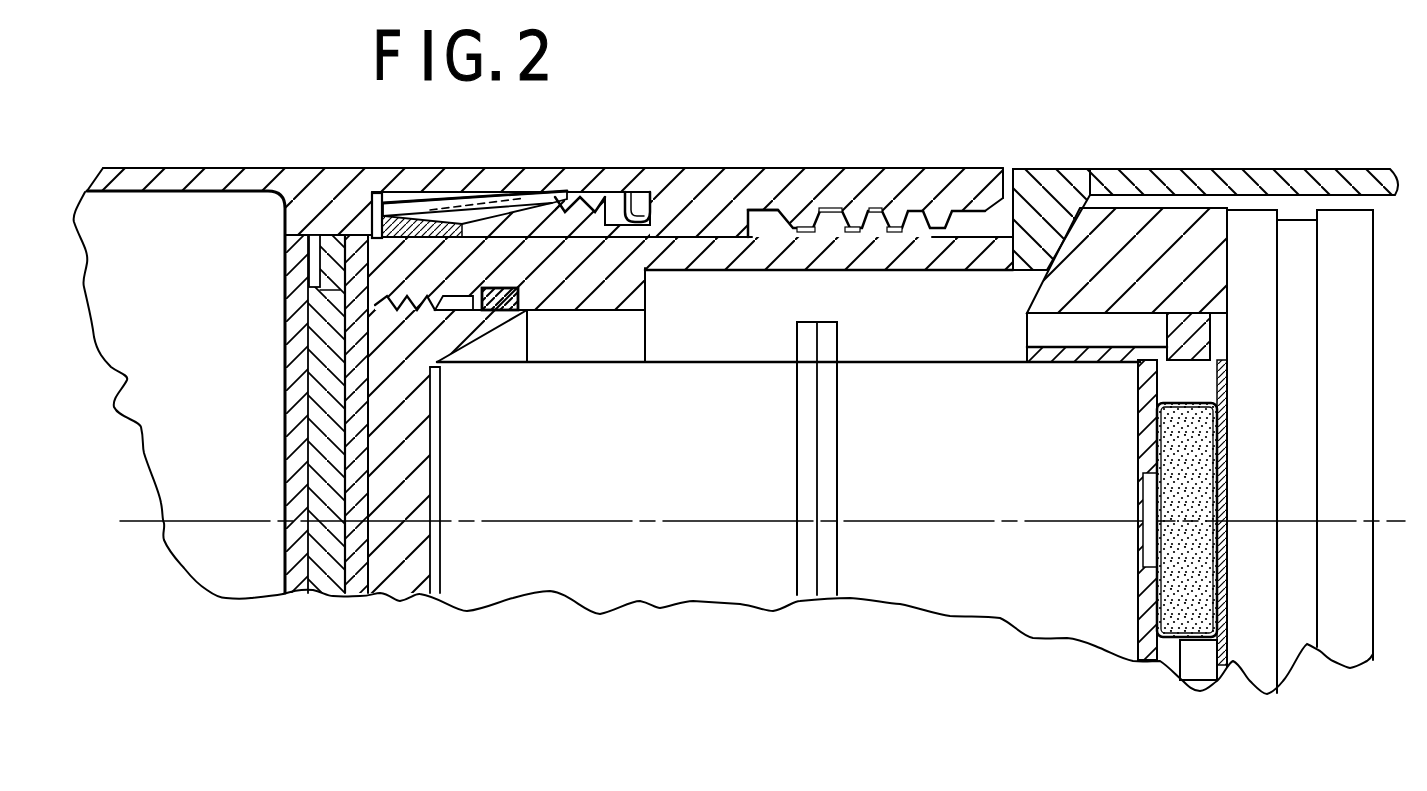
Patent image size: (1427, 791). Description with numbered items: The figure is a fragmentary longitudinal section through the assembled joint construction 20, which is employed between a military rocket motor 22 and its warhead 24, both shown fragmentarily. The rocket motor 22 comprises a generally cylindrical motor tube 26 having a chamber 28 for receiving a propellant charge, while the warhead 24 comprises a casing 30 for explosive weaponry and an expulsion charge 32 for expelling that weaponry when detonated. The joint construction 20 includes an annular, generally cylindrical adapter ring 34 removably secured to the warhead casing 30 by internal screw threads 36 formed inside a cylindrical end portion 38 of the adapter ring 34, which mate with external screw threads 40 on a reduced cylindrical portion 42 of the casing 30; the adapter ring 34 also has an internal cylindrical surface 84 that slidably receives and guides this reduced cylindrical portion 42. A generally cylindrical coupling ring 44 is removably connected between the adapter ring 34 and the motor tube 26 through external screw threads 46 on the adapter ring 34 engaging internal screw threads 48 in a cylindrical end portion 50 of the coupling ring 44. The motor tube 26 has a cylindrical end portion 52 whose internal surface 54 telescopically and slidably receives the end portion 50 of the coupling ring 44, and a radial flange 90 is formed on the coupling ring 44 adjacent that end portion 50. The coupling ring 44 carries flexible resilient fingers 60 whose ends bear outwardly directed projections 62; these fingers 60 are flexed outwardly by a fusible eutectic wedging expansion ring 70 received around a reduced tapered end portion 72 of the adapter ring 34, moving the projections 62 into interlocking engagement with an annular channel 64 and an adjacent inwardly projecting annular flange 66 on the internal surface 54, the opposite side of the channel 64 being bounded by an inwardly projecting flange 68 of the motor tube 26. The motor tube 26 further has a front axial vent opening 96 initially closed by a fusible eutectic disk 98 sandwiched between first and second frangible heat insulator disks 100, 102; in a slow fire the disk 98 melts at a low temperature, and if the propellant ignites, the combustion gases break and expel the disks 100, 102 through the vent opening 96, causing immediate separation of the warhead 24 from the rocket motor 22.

The joint construction 20 is at (1045, 106).
The rocket motor 22 is at (170, 146).
The warhead 24 is at (1273, 144).
The motor tube 26 is at (218, 168).
The chamber 28 is at (145, 224).
The casing 30 is at (1180, 169).
The expulsion charge 32 is at (1190, 440).
The adapter ring 34 is at (722, 162).
The internal screw threads 36 is at (847, 228).
The cylindrical end portion 38 is at (838, 168).
The external screw threads 40 is at (873, 207).
The reduced cylindrical portion 42 is at (750, 233).
The coupling ring 44 is at (587, 176).
The external screw threads 46 is at (561, 197).
The internal screw threads 48 is at (650, 223).
The cylindrical end portion 50 is at (613, 200).
The end portion 52 is at (507, 168).
The internal surface 54 is at (448, 202).
The flexible resilient fingers 60 is at (456, 204).
The projections 62 is at (393, 208).
The annular channel 64 is at (378, 212).
The annular flange 66 is at (398, 206).
The inwardly projecting flange 68 is at (366, 213).
The wedging expansion ring 70 is at (337, 214).
The tapered end portion 72 is at (419, 206).
The internal cylindrical surface 84 is at (672, 272).
The radial flange 90 is at (634, 207).
The front axial vent opening 96 is at (340, 292).
The fusible eutectic disk 98 is at (332, 595).
The first frangible heat insulator disk 100 is at (297, 466).
The second frangible heat insulator disk 102 is at (360, 595).